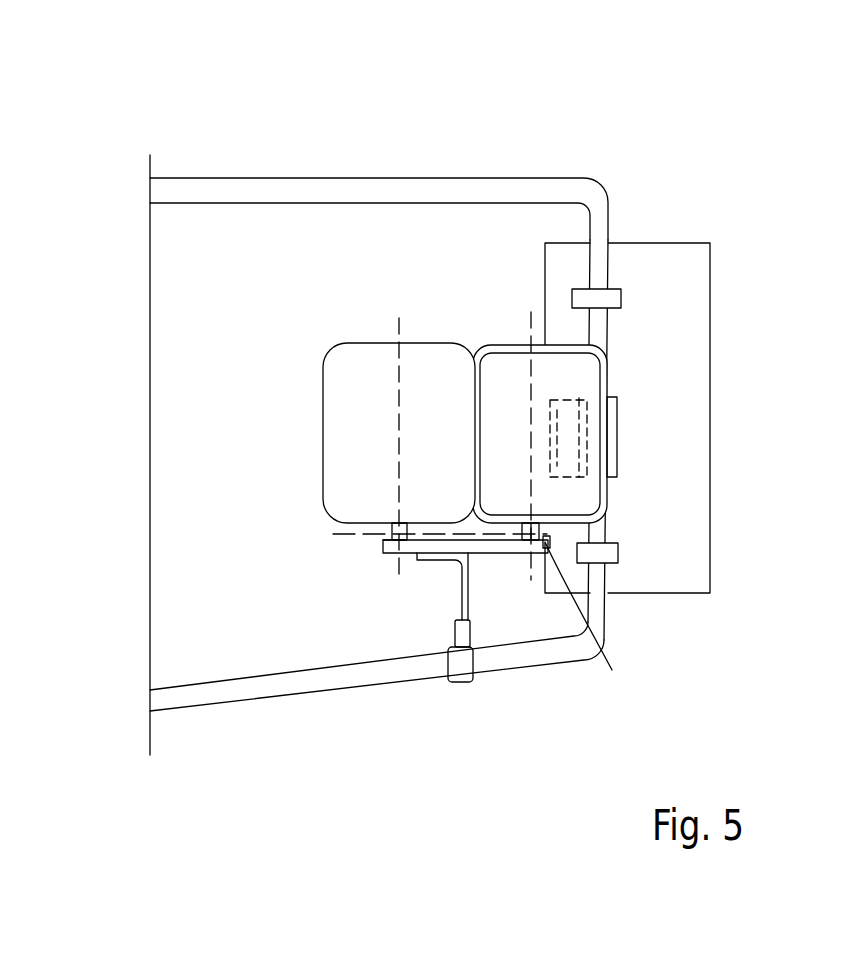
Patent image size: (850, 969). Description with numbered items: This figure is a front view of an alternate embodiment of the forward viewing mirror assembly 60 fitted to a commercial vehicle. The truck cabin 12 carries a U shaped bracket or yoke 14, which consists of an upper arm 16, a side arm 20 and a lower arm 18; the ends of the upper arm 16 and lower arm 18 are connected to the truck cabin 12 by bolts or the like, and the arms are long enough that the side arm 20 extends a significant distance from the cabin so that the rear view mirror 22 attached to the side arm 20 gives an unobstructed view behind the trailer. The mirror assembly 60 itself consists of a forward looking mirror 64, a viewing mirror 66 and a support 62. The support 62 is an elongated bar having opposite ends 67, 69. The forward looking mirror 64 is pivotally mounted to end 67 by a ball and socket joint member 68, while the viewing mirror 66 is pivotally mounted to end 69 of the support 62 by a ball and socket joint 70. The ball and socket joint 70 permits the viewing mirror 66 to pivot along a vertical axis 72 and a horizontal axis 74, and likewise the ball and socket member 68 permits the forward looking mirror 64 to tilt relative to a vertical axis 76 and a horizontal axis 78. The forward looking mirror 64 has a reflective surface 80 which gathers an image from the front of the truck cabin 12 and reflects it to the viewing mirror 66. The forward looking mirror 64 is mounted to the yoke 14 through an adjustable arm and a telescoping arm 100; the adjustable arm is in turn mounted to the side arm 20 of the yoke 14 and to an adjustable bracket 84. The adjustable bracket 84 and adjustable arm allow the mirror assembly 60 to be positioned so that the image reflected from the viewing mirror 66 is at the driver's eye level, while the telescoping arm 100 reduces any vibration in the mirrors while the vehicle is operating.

The truck cabin 12 is at (88, 172).
The U shaped bracket (yoke) 14 is at (204, 186).
The upper arm 16 is at (352, 185).
The lower arm 18 is at (185, 700).
The side arm 20 is at (607, 518).
The rear view mirror 22 is at (703, 253).
The mirror assembly 60 is at (733, 129).
The support 62 is at (490, 553).
The forward looking mirror 64 is at (607, 493).
The viewing mirror 66 is at (340, 430).
The end of support 67 is at (537, 553).
The ball and socket joint member 68 is at (606, 620).
The end of support 69 is at (385, 553).
The ball and socket joint 70 is at (340, 507).
The vertical axis 72 is at (400, 322).
The horizontal axis 74 is at (340, 538).
The vertical axis 76 is at (527, 320).
The horizontal axis 78 is at (562, 533).
The reflective surface 80 is at (578, 363).
The adjustable bracket 84 is at (564, 419).
The telescoping arm 100 is at (455, 612).